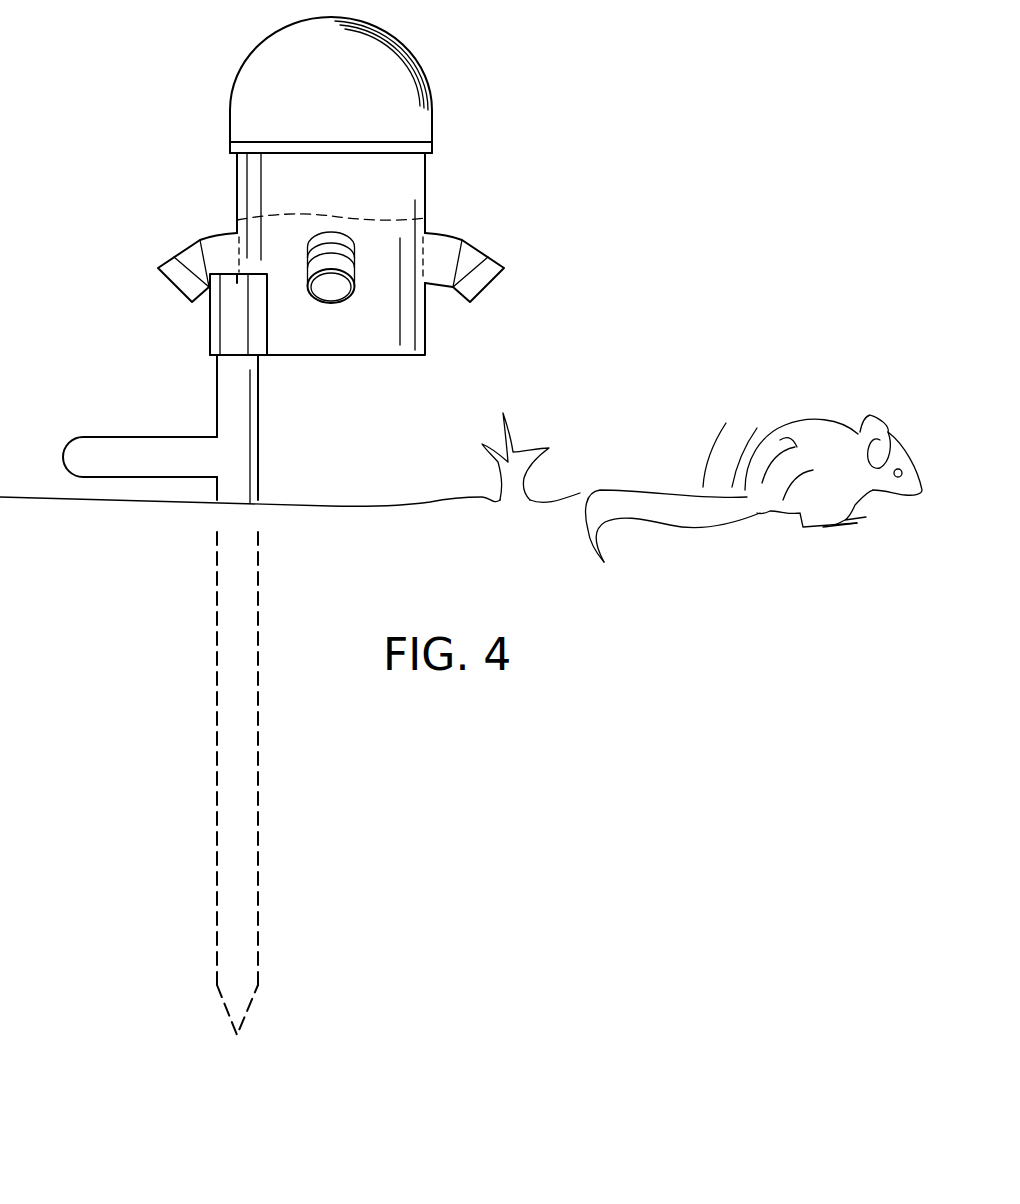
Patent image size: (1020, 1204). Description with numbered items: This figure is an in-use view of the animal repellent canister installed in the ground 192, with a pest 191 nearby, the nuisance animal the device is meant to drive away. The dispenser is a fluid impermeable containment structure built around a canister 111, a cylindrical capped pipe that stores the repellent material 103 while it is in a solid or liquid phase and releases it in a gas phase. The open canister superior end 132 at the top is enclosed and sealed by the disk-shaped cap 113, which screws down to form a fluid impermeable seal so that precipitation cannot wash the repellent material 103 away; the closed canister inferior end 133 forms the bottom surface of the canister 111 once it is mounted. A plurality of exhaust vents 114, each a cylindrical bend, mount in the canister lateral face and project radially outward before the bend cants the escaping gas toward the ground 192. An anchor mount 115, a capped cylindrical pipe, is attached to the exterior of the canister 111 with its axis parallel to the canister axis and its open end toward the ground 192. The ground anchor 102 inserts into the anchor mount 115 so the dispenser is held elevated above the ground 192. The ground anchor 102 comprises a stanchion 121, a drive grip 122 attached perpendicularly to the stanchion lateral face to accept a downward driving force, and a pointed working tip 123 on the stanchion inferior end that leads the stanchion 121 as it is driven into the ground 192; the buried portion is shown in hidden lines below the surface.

The cap 113 is at (378, 78).
The canister superior end 132 is at (380, 155).
The repellent material 103 is at (387, 242).
The canister 111 is at (408, 320).
The exhaust vents 114 is at (177, 267).
The anchor mount 115 is at (220, 323).
The canister inferior end 133 is at (327, 355).
The stanchion 121 is at (243, 435).
The drive grip 122 is at (130, 465).
The ground anchor 102 is at (258, 612).
The working tip 123 is at (237, 1035).
The ground 192 is at (430, 502).
The pest 191 is at (808, 417).